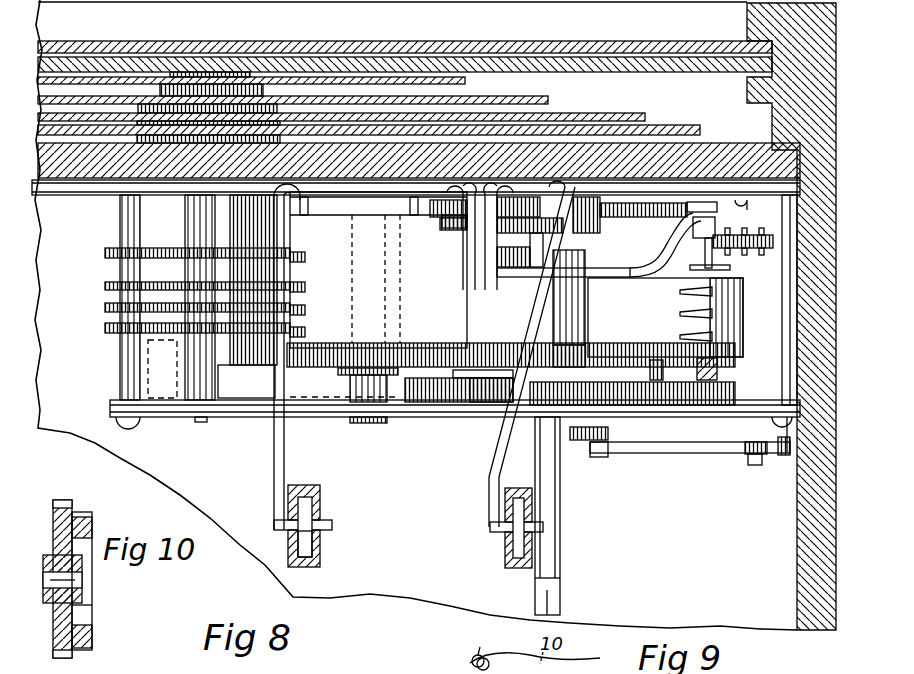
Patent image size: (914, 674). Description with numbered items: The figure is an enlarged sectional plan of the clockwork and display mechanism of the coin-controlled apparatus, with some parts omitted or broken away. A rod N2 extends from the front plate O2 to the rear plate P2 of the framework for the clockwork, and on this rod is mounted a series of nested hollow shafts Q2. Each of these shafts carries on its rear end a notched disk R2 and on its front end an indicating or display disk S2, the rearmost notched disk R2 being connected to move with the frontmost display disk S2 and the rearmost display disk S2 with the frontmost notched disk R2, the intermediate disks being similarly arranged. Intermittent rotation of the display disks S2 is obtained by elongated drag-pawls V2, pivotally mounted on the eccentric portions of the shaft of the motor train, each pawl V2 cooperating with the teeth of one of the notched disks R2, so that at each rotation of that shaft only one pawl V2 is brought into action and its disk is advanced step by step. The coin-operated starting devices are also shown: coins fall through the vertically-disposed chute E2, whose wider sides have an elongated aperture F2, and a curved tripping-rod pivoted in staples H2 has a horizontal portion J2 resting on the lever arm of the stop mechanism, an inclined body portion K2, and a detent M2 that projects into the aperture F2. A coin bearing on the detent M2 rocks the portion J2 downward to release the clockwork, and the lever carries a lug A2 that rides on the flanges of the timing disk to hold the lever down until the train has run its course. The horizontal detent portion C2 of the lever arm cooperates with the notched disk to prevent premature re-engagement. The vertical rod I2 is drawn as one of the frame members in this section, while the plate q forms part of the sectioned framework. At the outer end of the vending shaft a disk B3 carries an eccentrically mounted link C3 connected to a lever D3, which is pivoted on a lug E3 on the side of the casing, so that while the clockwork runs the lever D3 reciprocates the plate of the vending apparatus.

The indicating or display disk S2 is at (467, 83).
The front plate O2 is at (96, 297).
The nested hollow shafts Q2 is at (247, 297).
The notched disk R2 is at (103, 330).
The frame plate q is at (108, 343).
The rear plate P2 is at (178, 417).
The rod N2 is at (201, 422).
The staples H2 is at (307, 192).
The body portion of tripping-rod K2 is at (417, 188).
The arm or lug A2 is at (513, 285).
The horizontal portion of tripping-rod J2 is at (487, 285).
The drag-pawl V2 is at (712, 305).
The horizontal portion of arm C2 is at (743, 268).
The toothed block J is at (574, 343).
The vertical rod I2 is at (289, 357).
The detent M2 is at (332, 524).
The elongated aperture F2 is at (320, 538).
The vertically-disposed chute E2 is at (317, 559).
The disk B3 is at (610, 434).
The link C3 is at (687, 452).
The lever D3 is at (747, 457).
The lug or projection E3 is at (780, 455).